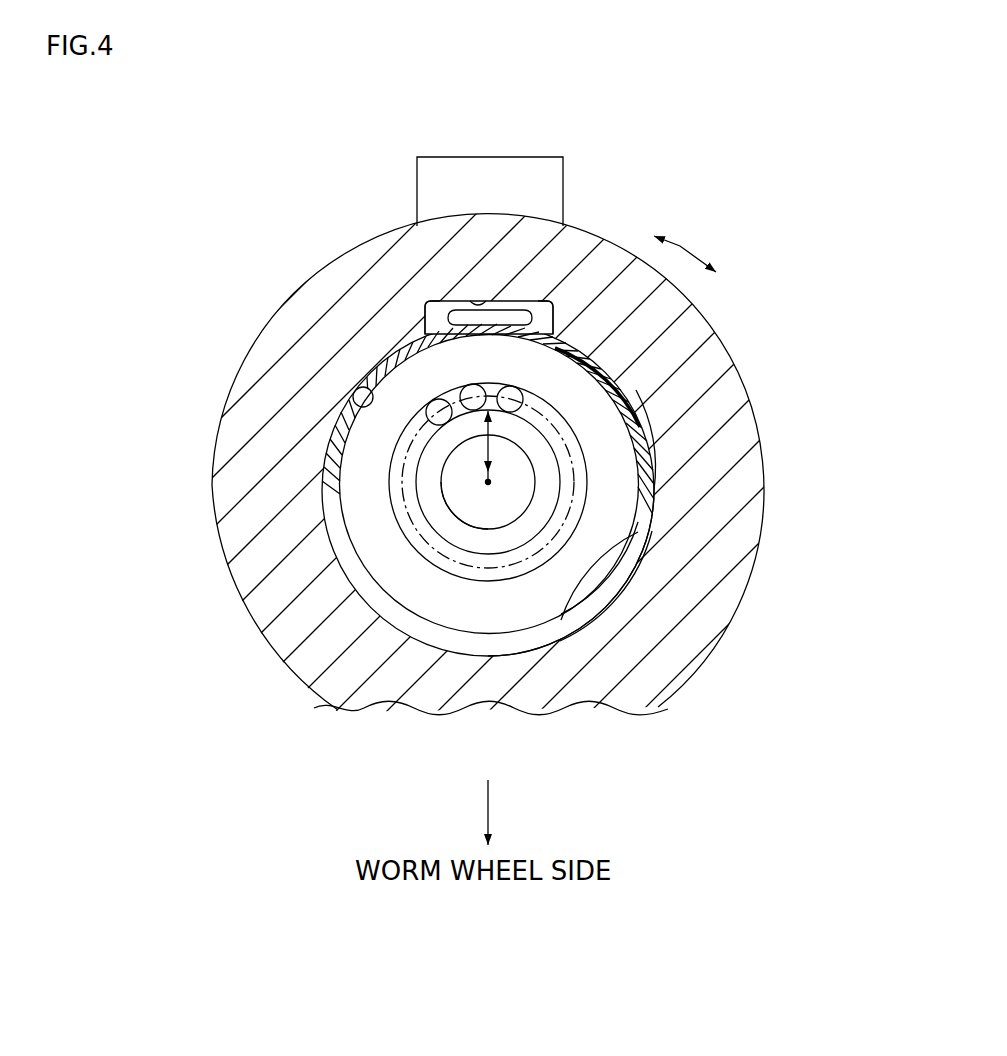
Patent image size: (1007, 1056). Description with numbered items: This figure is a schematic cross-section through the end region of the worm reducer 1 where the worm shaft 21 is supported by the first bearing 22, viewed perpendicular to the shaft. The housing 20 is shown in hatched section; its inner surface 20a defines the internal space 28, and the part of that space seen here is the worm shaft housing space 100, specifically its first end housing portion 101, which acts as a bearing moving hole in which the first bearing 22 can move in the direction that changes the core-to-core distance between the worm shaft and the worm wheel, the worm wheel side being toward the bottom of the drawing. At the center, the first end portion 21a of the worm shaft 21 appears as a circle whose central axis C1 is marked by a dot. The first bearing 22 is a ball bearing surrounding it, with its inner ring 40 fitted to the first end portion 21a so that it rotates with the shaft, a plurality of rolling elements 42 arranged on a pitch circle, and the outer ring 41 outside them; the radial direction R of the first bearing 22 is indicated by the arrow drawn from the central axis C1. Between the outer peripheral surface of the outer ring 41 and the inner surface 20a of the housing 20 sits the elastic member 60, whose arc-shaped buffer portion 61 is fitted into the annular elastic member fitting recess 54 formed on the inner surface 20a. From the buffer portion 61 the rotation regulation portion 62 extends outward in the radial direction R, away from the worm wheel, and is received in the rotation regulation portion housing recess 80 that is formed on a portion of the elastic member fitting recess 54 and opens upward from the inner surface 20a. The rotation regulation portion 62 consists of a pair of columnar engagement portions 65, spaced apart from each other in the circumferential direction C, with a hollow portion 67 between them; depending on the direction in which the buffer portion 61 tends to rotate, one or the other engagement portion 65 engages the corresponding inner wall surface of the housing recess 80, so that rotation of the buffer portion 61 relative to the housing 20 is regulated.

The worm reducer 1 is at (630, 222).
The housing 20 is at (725, 397).
The inner surface 20a is at (652, 458).
The worm shaft 21 is at (487, 531).
The first end portion 21a is at (467, 500).
The first bearing 22 is at (579, 602).
The internal space 28 is at (654, 482).
The inner ring 40 is at (430, 482).
The outer ring 41 is at (378, 528).
The rolling elements 42 is at (508, 388).
The elastic member fitting recess 54 is at (356, 394).
The elastic member 60 is at (612, 354).
The buffer portion 61 is at (638, 380).
The rotation regulation portion 62 is at (476, 296).
The engagement portions 65 is at (430, 314).
The hollow portion 67 is at (458, 318).
The rotation regulation portion housing recess 80 is at (505, 312).
The worm shaft housing space 100 is at (620, 577).
The first end housing portion 101 is at (640, 540).
The circumferential direction C is at (692, 247).
The central axis C1 is at (490, 488).
The radial direction R is at (470, 443).